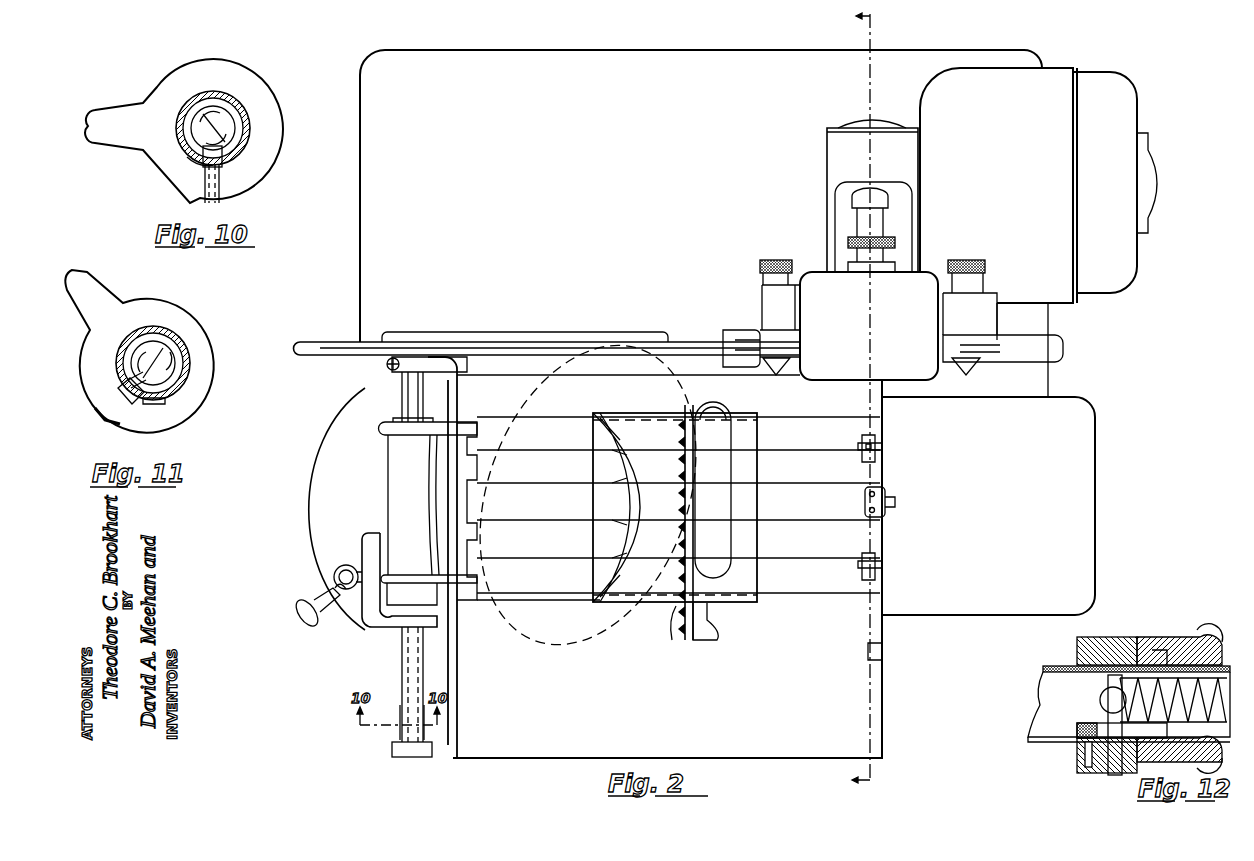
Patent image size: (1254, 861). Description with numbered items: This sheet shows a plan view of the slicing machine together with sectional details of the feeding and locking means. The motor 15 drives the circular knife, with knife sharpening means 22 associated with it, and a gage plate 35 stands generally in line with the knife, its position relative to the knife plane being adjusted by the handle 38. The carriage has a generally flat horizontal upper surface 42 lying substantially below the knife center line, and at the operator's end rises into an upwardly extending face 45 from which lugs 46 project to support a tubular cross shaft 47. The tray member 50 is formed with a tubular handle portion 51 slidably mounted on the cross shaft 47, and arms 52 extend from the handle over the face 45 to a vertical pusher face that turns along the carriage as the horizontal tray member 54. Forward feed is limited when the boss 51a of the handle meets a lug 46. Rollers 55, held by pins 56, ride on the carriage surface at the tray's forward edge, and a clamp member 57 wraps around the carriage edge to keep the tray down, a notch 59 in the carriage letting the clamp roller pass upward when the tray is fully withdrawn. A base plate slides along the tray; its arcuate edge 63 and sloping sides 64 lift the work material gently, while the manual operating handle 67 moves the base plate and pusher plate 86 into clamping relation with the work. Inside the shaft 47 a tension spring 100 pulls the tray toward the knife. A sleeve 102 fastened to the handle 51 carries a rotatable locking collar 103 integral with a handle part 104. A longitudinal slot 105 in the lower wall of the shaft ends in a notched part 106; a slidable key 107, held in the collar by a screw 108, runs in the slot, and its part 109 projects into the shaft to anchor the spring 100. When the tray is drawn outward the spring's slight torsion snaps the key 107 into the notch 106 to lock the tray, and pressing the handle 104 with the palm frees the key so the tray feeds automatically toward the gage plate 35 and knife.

In FIG. 2, the motor 15 is at (1112, 90).
In FIG. 2, the knife sharpening means 22 is at (806, 262).
In FIG. 2, the gage plate 35 is at (318, 342).
In FIG. 2, the handle 38 is at (318, 600).
In FIG. 2, the upper surface of the carriage 42 is at (818, 713).
In FIG. 2, the upwardly extending face 45 is at (456, 678).
In FIG. 2, the lugs 46 is at (388, 363).
In FIG. 2, the tubular cross shaft 47 is at (412, 385).
In FIG. 10, the tubular cross shaft 47 is at (248, 146).
In FIG. 12, the tubular cross shaft 47 is at (1058, 667).
In FIG. 2, the tray member 50 is at (777, 604).
In FIG. 2, the tubular handle portion 51 is at (398, 470).
In FIG. 2, the boss 51a is at (405, 421).
In FIG. 2, the arms 52 is at (458, 425).
In FIG. 2, the tray member (horizontal part) 54 is at (548, 590).
In FIG. 2, the rollers 55 is at (878, 440).
In FIG. 2, the pins 56 is at (880, 450).
In FIG. 2, the clamp member 57 is at (895, 500).
In FIG. 2, the notch 59 is at (885, 652).
In FIG. 2, the edge of base plate 63 is at (633, 496).
In FIG. 2, the sides of sloping surface 64 is at (596, 597).
In FIG. 2, the manual operating handle 67 is at (720, 555).
In FIG. 2, the pusher plate 86 is at (675, 615).
In FIG. 10, the tension spring 100 is at (240, 128).
In FIG. 12, the sleeve 102 is at (1172, 637).
In FIG. 2, the locking collar 103 is at (395, 632).
In FIG. 10, the locking collar 103 is at (162, 86).
In FIG. 12, the locking collar 103 is at (1106, 637).
In FIG. 2, the handle part 104 is at (362, 545).
In FIG. 11, the handle part 104 is at (86, 280).
In FIG. 11, the longitudinal slot 105 is at (148, 397).
In FIG. 12, the longitudinal slot 105 is at (1042, 738).
In FIG. 2, the notched part 106 is at (400, 732).
In FIG. 10, the notched part 106 is at (187, 157).
In FIG. 10, the slidable key 107 is at (222, 162).
In FIG. 12, the slidable key 107 is at (1100, 726).
In FIG. 12, the screw 108 is at (1083, 772).
In FIG. 10, the part of key 109 is at (214, 114).
In FIG. 12, the part of key 109 is at (1107, 686).